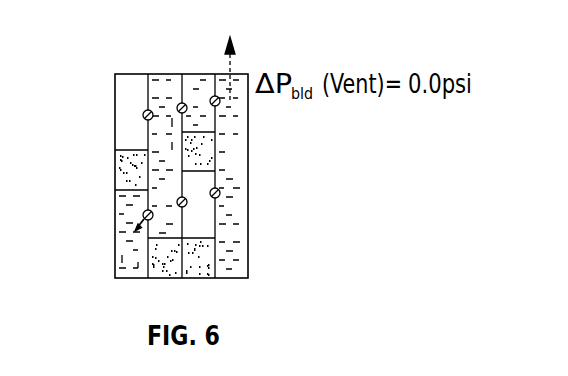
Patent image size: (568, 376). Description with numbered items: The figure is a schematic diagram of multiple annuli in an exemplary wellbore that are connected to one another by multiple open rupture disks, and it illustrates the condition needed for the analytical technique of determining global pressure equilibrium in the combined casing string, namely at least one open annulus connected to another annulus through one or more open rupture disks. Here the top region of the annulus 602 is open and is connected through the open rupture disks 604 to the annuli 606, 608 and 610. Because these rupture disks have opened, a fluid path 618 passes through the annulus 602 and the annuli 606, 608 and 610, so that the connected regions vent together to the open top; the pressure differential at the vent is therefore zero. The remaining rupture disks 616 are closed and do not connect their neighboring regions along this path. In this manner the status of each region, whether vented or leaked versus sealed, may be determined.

The annulus 602 is at (248, 264).
The open rupture disks 604 is at (180, 105).
The annulus 606 is at (196, 82).
The annulus 608 is at (145, 158).
The annulus 610 is at (120, 262).
The rupture disks 616 is at (145, 114).
The fluid path 618 is at (233, 58).